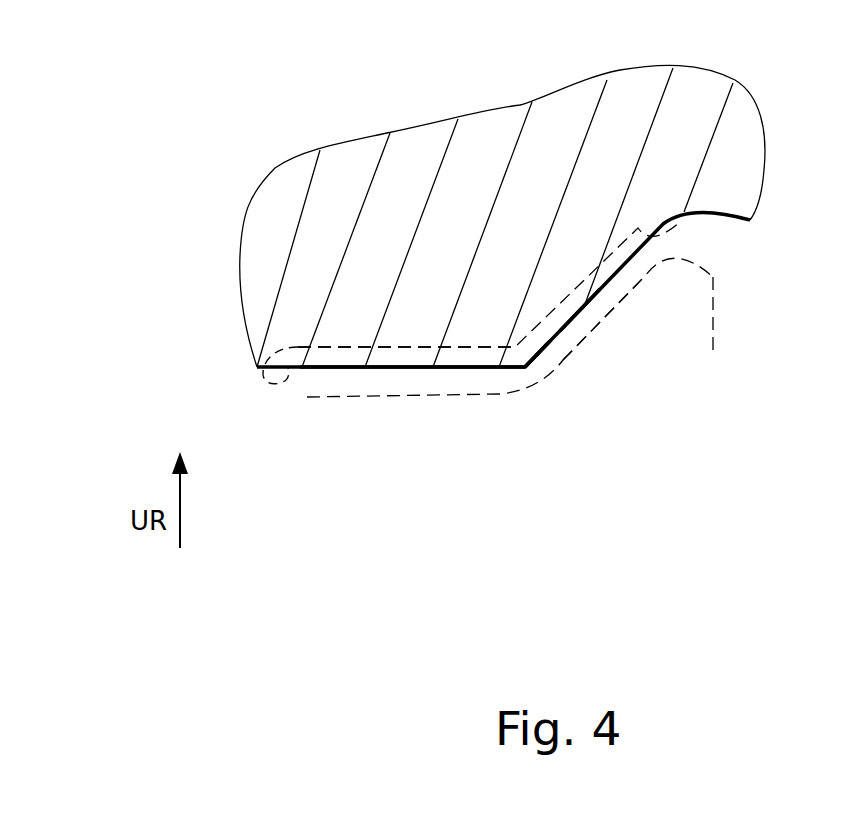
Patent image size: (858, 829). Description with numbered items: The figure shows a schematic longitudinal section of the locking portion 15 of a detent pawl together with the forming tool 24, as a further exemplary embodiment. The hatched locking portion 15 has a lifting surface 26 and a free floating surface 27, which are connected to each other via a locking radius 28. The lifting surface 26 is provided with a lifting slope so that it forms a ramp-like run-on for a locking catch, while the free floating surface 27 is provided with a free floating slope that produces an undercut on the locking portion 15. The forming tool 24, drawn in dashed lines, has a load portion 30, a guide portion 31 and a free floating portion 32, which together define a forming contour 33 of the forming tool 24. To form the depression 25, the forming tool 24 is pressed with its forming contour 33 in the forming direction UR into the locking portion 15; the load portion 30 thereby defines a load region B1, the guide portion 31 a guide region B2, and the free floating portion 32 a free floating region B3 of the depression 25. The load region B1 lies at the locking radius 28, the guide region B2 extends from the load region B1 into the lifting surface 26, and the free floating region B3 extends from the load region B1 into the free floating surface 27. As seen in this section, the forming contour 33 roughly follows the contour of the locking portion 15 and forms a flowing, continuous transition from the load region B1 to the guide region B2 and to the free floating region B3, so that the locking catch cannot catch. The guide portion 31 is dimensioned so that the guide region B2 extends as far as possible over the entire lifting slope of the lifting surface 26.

The locking portion 15 is at (348, 163).
The forming tool 24 is at (737, 326).
The depression 25 is at (469, 363).
The lifting surface 26 is at (587, 333).
The free floating surface 27 is at (408, 367).
The locking radius 28 is at (527, 369).
The load portion 30 is at (536, 371).
The guide portion 31 is at (623, 300).
The free floating portion 32 is at (410, 397).
The forming contour 33 is at (306, 383).
The load region B1 is at (540, 380).
The guide region B2 is at (583, 309).
The free floating region B3 is at (393, 348).